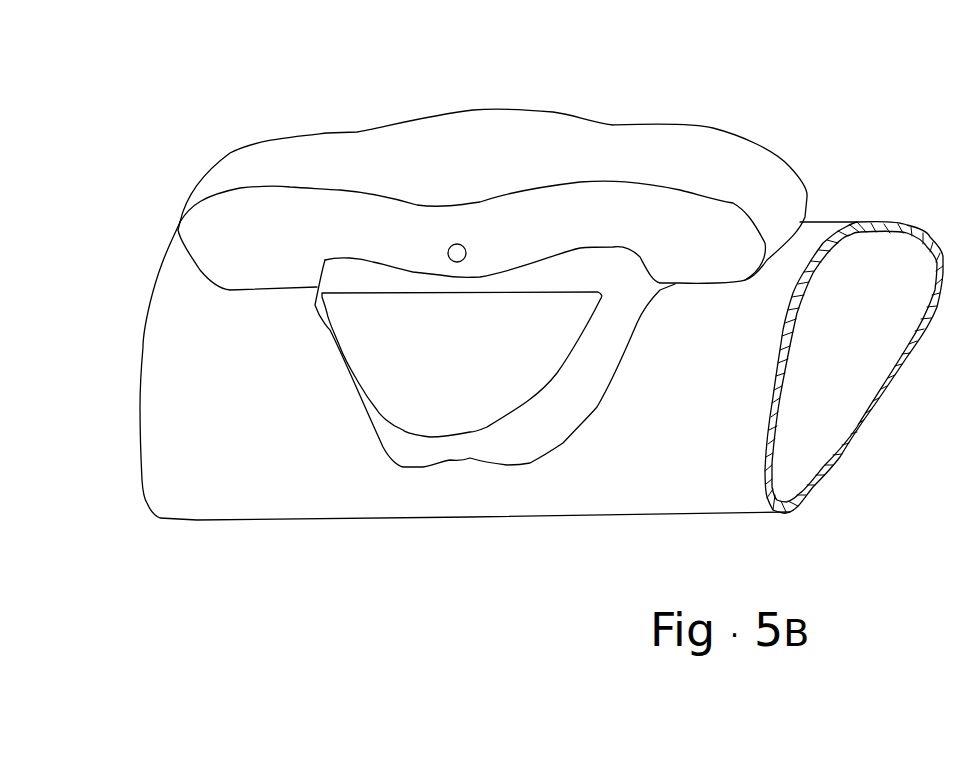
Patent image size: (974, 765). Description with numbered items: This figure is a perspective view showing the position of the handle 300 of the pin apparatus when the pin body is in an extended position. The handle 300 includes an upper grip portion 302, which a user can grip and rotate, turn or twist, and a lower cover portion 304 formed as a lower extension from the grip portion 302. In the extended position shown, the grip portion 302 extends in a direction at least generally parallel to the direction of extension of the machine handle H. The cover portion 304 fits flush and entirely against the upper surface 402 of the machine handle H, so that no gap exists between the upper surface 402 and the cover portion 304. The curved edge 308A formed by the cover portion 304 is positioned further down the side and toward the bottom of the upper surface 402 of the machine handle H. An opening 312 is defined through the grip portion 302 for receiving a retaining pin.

The handle 300 is at (735, 75).
The upper grip portion 302 is at (358, 130).
The cover portion 304 is at (670, 404).
The edge 308A is at (462, 463).
The opening 312 is at (463, 246).
The upper surface 402 is at (723, 353).
The machine handle H is at (140, 418).